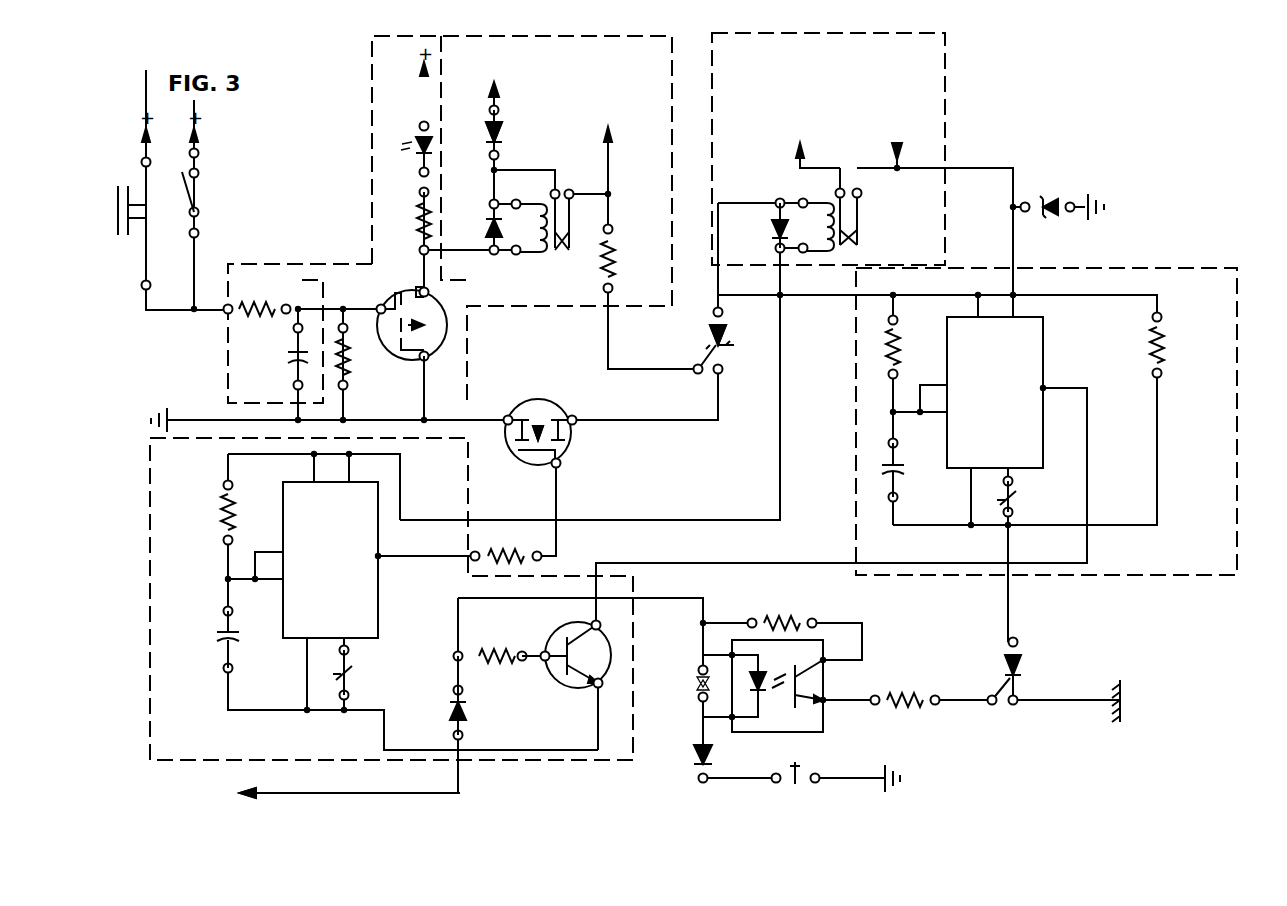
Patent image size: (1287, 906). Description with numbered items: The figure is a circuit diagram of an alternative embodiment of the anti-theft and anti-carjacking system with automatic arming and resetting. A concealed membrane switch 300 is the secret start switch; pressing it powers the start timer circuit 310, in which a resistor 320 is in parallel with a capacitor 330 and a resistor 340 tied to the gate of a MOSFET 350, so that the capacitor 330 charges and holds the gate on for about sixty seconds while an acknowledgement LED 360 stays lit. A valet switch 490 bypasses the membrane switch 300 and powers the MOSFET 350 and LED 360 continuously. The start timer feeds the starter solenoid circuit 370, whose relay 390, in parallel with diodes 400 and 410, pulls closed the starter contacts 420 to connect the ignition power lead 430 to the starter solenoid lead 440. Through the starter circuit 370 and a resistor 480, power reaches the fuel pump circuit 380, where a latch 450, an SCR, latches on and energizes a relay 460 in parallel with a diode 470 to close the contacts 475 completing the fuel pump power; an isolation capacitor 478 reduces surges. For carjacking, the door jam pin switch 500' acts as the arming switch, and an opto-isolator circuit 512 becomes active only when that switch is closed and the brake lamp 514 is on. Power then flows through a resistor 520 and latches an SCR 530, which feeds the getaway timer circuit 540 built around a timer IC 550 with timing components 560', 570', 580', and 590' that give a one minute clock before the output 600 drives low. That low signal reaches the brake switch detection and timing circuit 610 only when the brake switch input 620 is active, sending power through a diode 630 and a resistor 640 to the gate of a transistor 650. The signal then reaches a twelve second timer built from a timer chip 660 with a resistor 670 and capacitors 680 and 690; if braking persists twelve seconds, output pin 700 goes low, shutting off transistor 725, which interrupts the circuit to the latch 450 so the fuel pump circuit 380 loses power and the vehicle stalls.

The membrane switch 300 is at (118, 216).
The valet switch 490 is at (196, 188).
The start timer circuit 310 is at (370, 260).
The resistor 320 is at (254, 297).
The capacitor 330 is at (288, 354).
The resistor 340 is at (353, 358).
The MOSFET 350 is at (401, 294).
The acknowledgement LED 360 is at (402, 196).
The starter solenoid circuit 370 is at (650, 32).
The fuel pump circuit 380 is at (863, 33).
The relay 390 is at (540, 256).
The diode 400 is at (484, 229).
The diode 410 is at (499, 132).
The starter contacts 420 is at (564, 250).
The ignition power lead 430 is at (488, 78).
The starter solenoid lead 440 is at (607, 103).
The latch 450 is at (710, 340).
The relay 460 is at (834, 202).
The diode 470 is at (772, 226).
The contacts 475 is at (862, 218).
The isolation capacitor 478 is at (1040, 198).
The resistor 480 is at (620, 250).
The door jam pin switch 500' is at (896, 731).
The opto-isolator circuit 512 is at (784, 618).
The brake lamp 514 is at (690, 596).
The resistor 520 is at (910, 706).
The SCR 530 is at (1004, 666).
The getaway timer circuit 540 is at (1108, 268).
The timer IC 550 is at (993, 395).
The capacitor 560' is at (910, 470).
The capacitor 570' is at (1033, 497).
The resistor 580' is at (1182, 345).
The resistor 590' is at (915, 347).
The output 600 is at (1096, 400).
The brake switch detection and timing circuit 610 is at (148, 493).
The brake switch input 620 is at (315, 796).
The diode 630 is at (452, 716).
The resistor 640 is at (486, 648).
The transistor 650 is at (560, 690).
The timer chip 660 is at (330, 562).
The resistor 670 is at (218, 518).
The capacitor 680 is at (240, 642).
The capacitor 690 is at (350, 672).
The output pin 700 is at (450, 559).
The transistor 725 is at (559, 400).